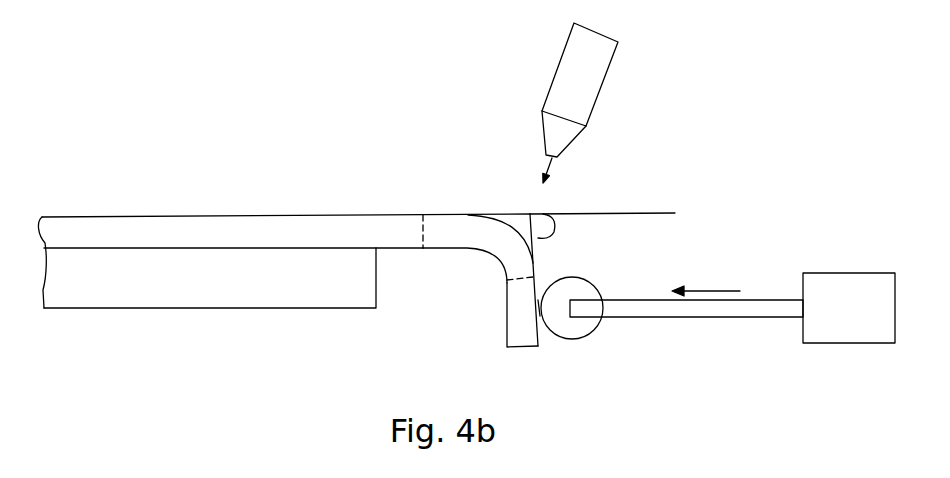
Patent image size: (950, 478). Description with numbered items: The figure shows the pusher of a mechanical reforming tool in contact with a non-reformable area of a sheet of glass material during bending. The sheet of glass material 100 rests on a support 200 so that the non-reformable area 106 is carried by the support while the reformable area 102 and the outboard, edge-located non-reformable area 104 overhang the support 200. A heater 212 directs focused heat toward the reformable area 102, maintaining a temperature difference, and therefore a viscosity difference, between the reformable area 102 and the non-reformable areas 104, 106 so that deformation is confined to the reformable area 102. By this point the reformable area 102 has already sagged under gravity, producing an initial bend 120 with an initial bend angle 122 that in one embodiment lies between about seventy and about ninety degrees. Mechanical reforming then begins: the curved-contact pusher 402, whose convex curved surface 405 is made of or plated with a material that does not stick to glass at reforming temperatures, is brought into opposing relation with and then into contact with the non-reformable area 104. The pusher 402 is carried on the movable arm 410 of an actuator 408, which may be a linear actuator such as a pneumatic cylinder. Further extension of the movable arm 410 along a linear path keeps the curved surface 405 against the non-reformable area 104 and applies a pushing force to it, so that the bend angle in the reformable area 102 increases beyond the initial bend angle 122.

The sheet of glass material 100 is at (356, 271).
The reformable area 102 is at (452, 225).
The non-reformable area 104 is at (519, 338).
The non-reformable area 106 is at (216, 225).
The initial bend 120 is at (496, 230).
The initial bend angle 122 is at (550, 240).
The support 200 is at (243, 295).
The heater 212 is at (584, 82).
The curved-contact pusher 402 is at (572, 335).
The curved surface 405 is at (542, 327).
The actuator 408 is at (848, 270).
The movable arm 410 is at (718, 309).